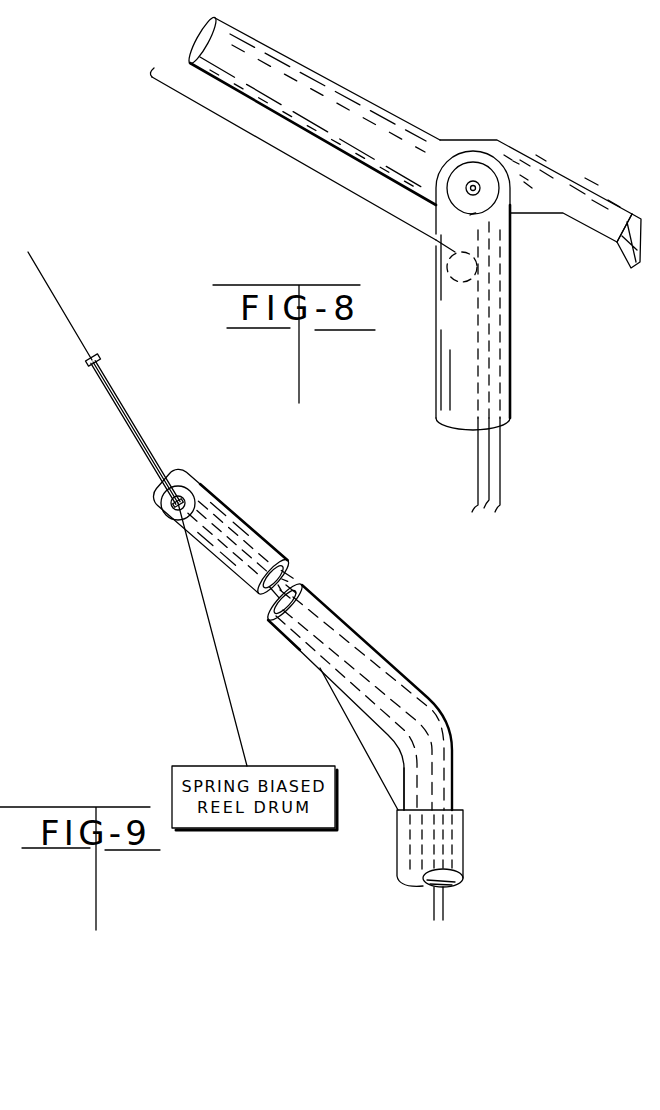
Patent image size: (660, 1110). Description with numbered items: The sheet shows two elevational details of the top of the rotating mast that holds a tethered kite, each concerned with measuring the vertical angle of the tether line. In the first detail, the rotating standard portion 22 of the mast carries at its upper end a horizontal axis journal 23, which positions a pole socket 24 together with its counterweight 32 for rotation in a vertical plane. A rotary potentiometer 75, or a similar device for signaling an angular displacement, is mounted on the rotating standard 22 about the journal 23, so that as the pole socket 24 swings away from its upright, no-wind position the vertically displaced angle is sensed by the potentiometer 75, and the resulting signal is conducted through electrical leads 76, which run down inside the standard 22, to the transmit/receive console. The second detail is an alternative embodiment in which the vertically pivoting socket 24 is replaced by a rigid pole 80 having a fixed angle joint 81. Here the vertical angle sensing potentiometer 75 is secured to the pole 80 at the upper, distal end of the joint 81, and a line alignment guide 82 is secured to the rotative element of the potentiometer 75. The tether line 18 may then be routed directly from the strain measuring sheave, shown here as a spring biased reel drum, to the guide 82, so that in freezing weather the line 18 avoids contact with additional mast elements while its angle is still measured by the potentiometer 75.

In FIG. 8, the tether line 18 is at (358, 196).
In FIG. 9, the tether line 18 is at (230, 716).
In FIG. 8, the rotating standard portion 22 is at (468, 353).
In FIG. 8, the horizontal axis journal 23 is at (478, 187).
In FIG. 8, the pole socket 24 is at (370, 135).
In FIG. 8, the counterweight 32 is at (615, 245).
In FIG. 8, the rotary potentiometer 75 is at (478, 168).
In FIG. 9, the rotary potentiometer 75 is at (196, 478).
In FIG. 8, the electrical leads 76 is at (499, 470).
In FIG. 9, the rigid pole 80 is at (320, 594).
In FIG. 9, the fixed angle joint 81 is at (454, 726).
In FIG. 9, the line alignment guide 82 is at (133, 414).